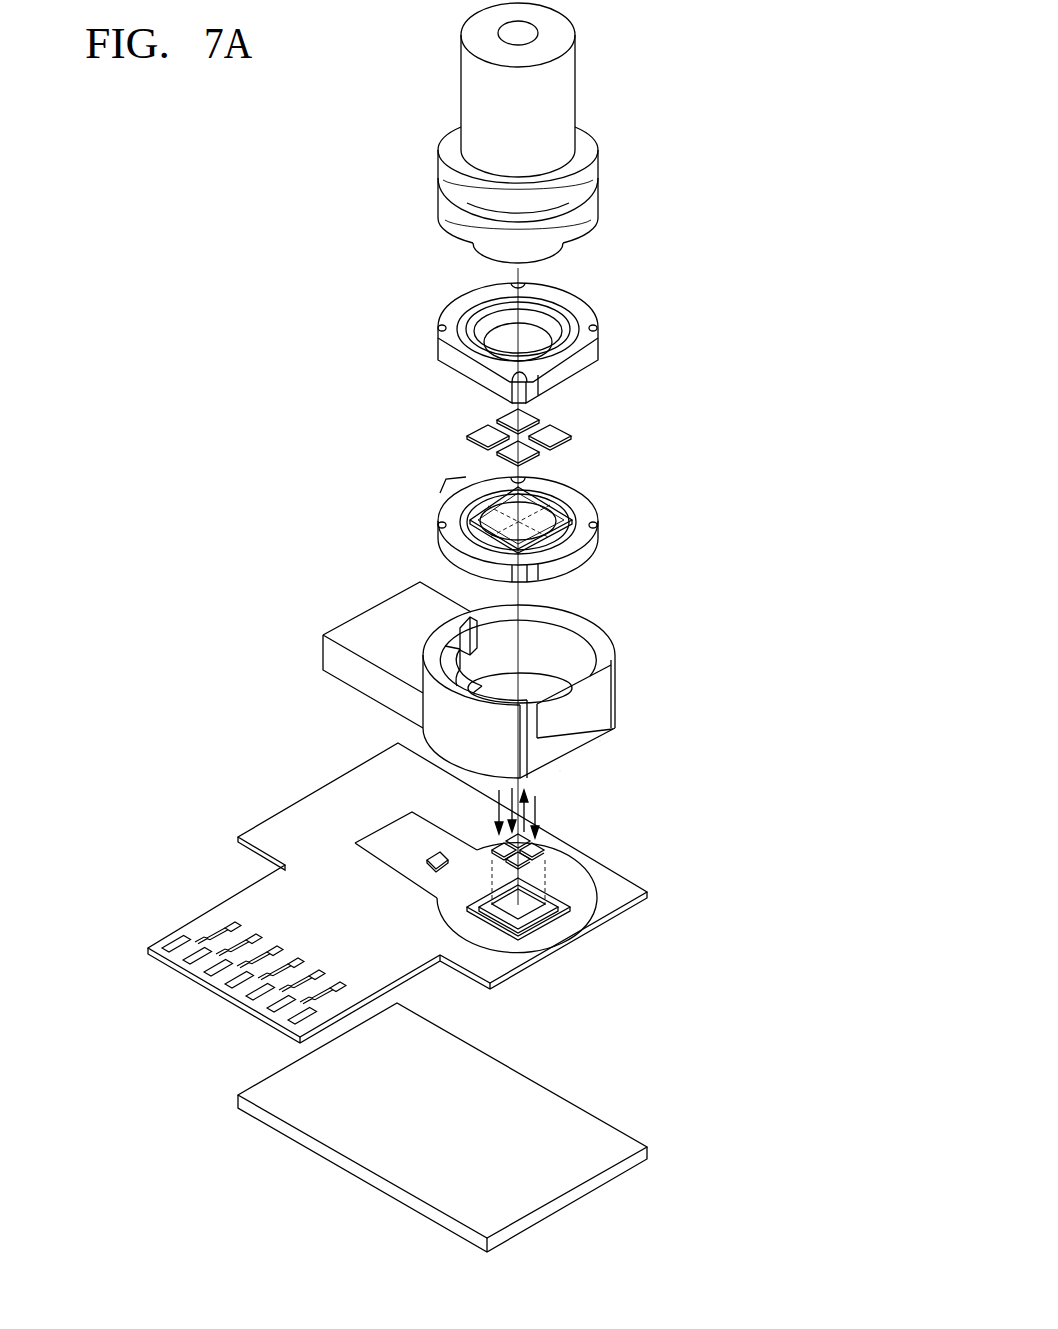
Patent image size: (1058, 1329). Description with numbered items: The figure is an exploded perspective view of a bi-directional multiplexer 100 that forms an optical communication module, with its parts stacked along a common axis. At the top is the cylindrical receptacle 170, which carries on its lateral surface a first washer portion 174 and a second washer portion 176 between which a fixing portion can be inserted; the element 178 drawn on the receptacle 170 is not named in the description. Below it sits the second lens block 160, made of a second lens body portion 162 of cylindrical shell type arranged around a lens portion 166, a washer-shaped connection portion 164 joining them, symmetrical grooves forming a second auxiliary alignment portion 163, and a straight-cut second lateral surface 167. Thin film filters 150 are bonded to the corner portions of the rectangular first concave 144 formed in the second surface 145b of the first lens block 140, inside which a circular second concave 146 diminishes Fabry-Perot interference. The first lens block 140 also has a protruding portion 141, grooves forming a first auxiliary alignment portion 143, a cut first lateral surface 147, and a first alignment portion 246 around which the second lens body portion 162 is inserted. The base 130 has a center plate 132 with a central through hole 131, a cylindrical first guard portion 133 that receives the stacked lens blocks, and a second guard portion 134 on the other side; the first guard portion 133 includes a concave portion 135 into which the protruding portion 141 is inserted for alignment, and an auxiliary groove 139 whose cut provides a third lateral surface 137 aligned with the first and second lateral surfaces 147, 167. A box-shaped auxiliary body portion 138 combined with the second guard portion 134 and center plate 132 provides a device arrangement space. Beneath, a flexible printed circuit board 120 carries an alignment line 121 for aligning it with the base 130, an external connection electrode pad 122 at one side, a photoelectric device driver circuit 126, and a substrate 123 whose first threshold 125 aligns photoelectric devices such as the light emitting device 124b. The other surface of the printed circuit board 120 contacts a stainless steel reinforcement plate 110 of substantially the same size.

The multiplexer 100 is at (714, 785).
The reinforcement plate 110 is at (630, 1135).
The printed circuit board 120 is at (632, 880).
The alignment line 121 is at (383, 828).
The external connection electrode pad 122 is at (170, 936).
The substrate 123 is at (537, 925).
The light emitting device 124b is at (547, 850).
The first threshold 125 is at (538, 912).
The photoelectric device driver circuit 126 is at (430, 866).
The base 130 is at (628, 693).
The through hole 131 is at (445, 652).
The center plate 132 is at (580, 745).
The first guard portion 133 is at (597, 622).
The second guard portion 134 is at (617, 715).
The concave portion 135 is at (445, 630).
The third lateral surface 137 is at (555, 762).
The auxiliary body portion 138 is at (330, 653).
The auxiliary groove 139 is at (570, 715).
The first lens block 140 is at (605, 502).
The protruding portion 141 is at (440, 497).
The first auxiliary alignment portion 143 is at (597, 525).
The first concave 144 is at (440, 507).
The second surface 145b is at (490, 498).
The second concave 146 is at (540, 505).
The first lateral surface 147 is at (573, 557).
The thin film filters 150 is at (572, 428).
The second lens block 160 is at (605, 298).
The second lens body portion 162 is at (455, 366).
The second auxiliary alignment portion 163 is at (598, 329).
The connection portion 164 is at (487, 312).
The lens portion 166 is at (497, 340).
The second lateral surface 167 is at (590, 358).
The receptacle 170 is at (605, 88).
The first washer portion 174 is at (598, 205).
The second washer portion 176 is at (598, 160).
The barrel body 178 is at (462, 80).
The first alignment portion 246 is at (480, 550).